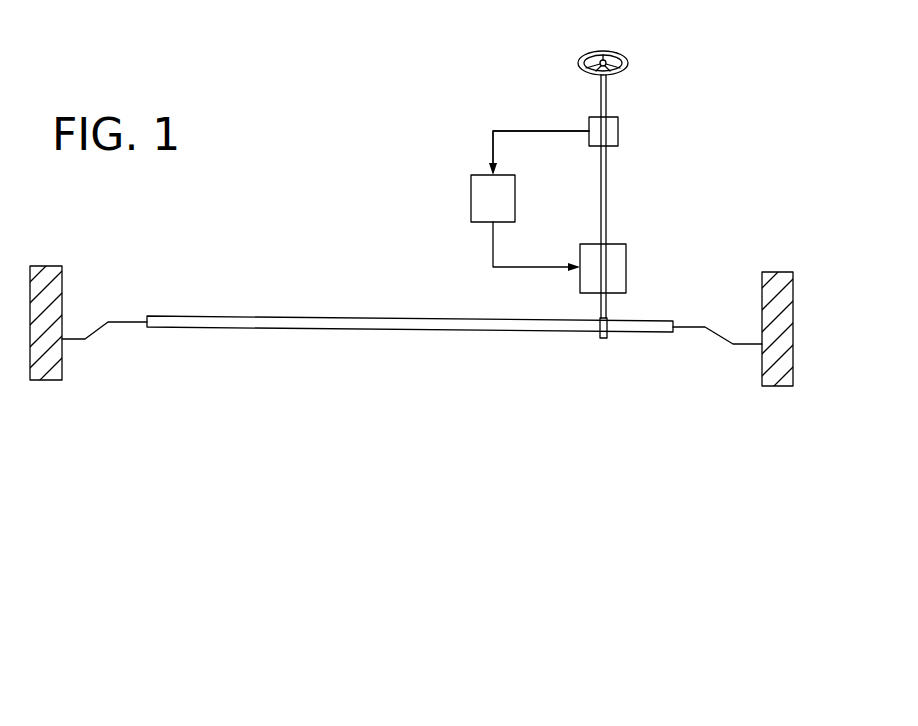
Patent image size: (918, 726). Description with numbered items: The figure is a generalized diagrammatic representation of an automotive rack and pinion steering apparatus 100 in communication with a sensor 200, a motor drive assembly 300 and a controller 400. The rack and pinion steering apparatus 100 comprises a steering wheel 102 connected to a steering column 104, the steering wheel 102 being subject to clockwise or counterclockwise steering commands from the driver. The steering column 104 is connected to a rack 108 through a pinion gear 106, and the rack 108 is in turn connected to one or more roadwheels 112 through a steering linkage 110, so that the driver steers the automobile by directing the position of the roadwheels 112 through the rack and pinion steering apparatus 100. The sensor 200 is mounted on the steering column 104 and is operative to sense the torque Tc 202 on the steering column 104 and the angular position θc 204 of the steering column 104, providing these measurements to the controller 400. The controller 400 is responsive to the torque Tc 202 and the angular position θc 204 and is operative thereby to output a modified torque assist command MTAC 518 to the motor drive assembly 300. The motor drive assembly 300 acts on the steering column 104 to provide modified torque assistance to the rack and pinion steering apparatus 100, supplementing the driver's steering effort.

The rack and pinion steering apparatus 100 is at (471, 438).
The steering wheel 102 is at (612, 51).
The steering column 104 is at (606, 203).
The pinion gear 106 is at (600, 327).
The rack 108 is at (288, 327).
The steering linkage 110 is at (103, 325).
The roadwheels 112 is at (45, 380).
The sensor 200 is at (618, 131).
The steering column torque Tc 202 is at (548, 130).
The steering column angular position θc 204 is at (507, 102).
The motor drive assembly 300 is at (626, 262).
The controller 400 is at (471, 197).
The modified torque assist command MTAC 518 is at (493, 255).